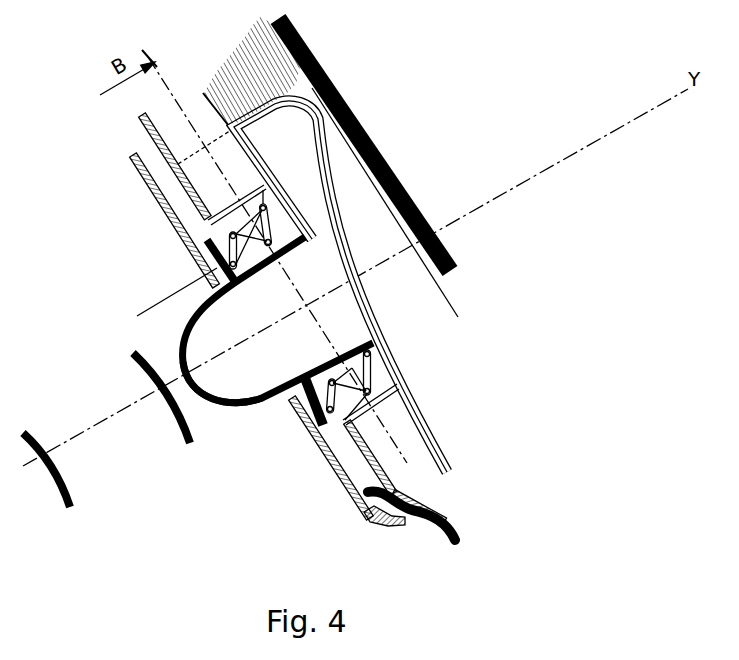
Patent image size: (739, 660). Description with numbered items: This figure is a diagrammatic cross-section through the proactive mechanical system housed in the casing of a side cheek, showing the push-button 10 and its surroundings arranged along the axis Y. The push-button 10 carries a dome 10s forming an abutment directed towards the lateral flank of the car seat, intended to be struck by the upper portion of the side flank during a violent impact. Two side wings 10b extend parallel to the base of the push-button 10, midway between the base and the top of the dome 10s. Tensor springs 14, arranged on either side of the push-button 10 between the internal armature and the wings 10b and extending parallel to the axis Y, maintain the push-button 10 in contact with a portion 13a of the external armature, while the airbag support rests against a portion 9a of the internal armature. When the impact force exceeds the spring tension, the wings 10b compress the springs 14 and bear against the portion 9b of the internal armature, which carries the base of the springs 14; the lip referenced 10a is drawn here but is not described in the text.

The side wings 10b is at (250, 212).
The portion of the external armature 13a is at (215, 262).
The tensor springs 14 is at (245, 220).
The attachment lip of weatherstrip 10a is at (222, 270).
The push-button 10 is at (226, 330).
The dome 10s is at (214, 396).
The portion of the internal armature 9a is at (380, 388).
The portion of the internal armature 9b is at (372, 360).